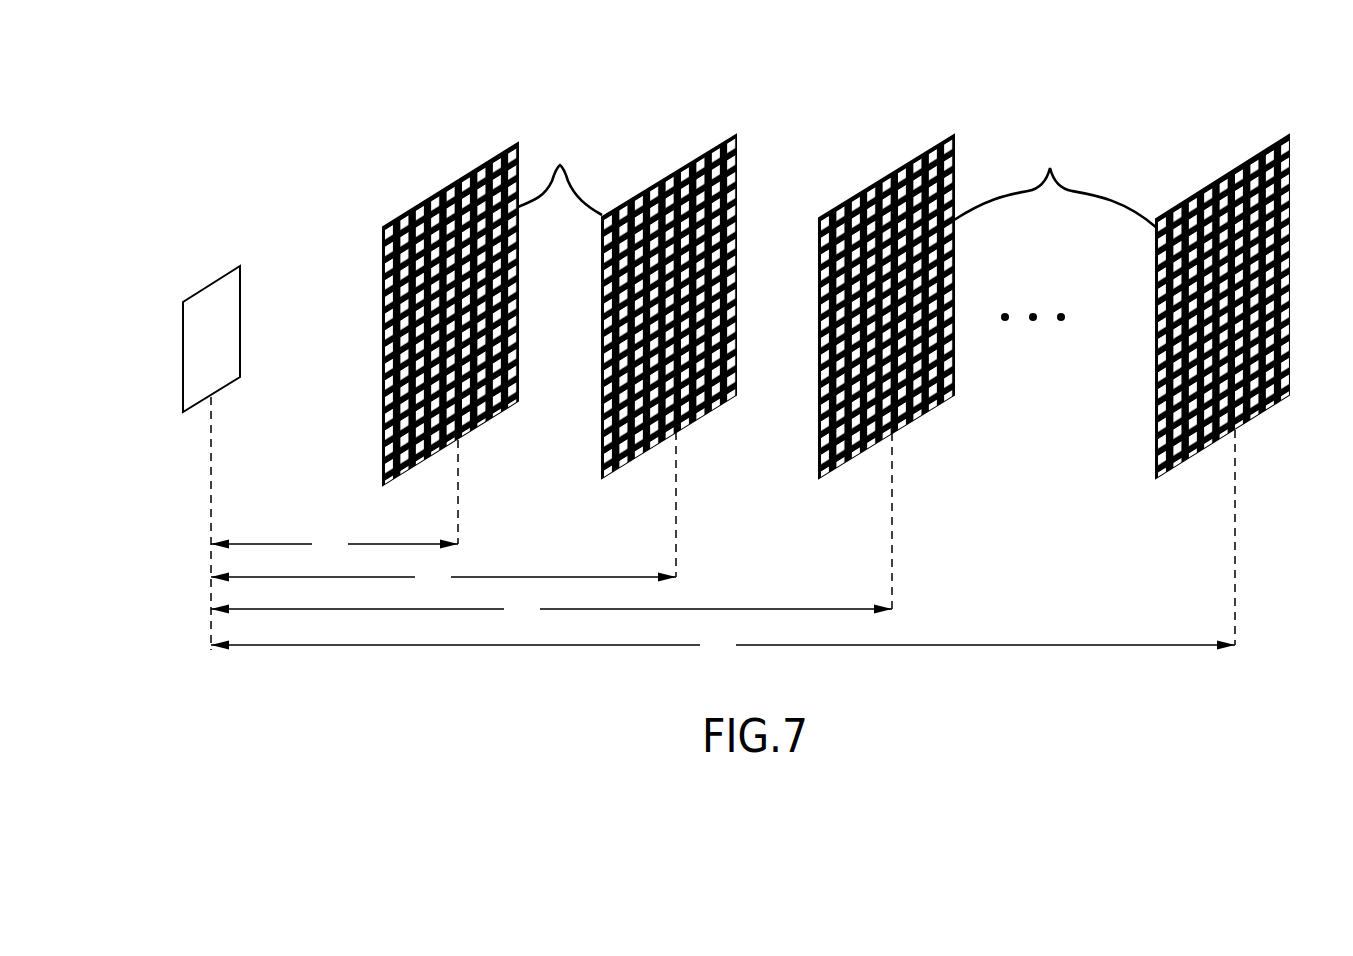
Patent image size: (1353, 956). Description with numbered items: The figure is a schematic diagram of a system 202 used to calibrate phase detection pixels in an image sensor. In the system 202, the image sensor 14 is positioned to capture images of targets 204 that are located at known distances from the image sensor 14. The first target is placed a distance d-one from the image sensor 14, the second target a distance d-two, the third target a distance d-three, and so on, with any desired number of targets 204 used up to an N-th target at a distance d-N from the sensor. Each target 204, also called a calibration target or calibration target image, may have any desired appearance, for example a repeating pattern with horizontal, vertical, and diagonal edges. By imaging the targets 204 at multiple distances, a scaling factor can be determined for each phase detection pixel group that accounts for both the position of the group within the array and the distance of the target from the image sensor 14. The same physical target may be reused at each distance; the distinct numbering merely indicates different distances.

The system 202 is at (286, 111).
The image sensor 14 is at (210, 291).
The targets 204 is at (837, 183).